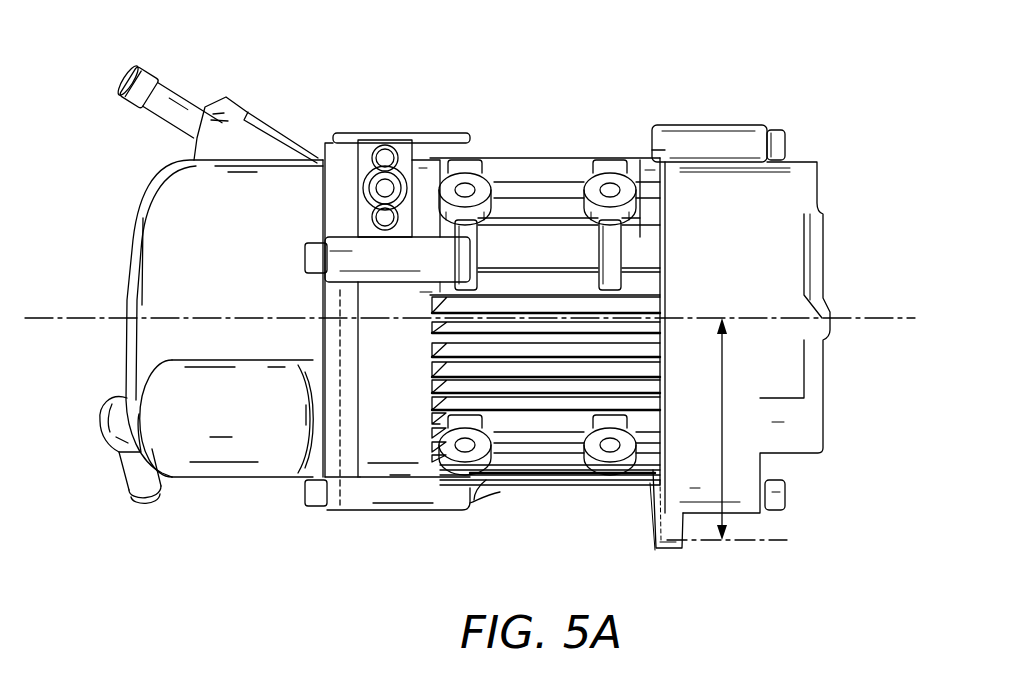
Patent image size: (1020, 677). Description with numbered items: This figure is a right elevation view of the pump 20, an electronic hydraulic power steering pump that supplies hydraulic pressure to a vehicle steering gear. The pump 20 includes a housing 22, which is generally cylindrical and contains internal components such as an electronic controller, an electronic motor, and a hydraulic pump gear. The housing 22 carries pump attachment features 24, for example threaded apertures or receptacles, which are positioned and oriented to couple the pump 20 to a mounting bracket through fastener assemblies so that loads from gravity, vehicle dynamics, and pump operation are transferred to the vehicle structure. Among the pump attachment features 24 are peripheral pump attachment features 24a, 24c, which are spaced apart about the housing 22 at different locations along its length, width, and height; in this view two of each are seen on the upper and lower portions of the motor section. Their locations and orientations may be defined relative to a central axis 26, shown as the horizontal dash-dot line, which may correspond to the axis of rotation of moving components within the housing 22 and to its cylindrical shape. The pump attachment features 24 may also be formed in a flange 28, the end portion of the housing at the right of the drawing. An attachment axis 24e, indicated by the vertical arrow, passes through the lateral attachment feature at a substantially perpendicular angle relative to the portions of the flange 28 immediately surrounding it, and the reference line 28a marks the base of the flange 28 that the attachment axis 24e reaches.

The pump 20 is at (82, 121).
The housing 22 is at (182, 248).
The pump attachment features 24 is at (595, 323).
The peripheral pump attachment features 24a is at (464, 190).
The peripheral pump attachment features 24c is at (610, 190).
The attachment axis 24e is at (722, 373).
The central axis 26 is at (890, 318).
The flange 28 is at (677, 553).
The housing base plane 28a is at (773, 542).